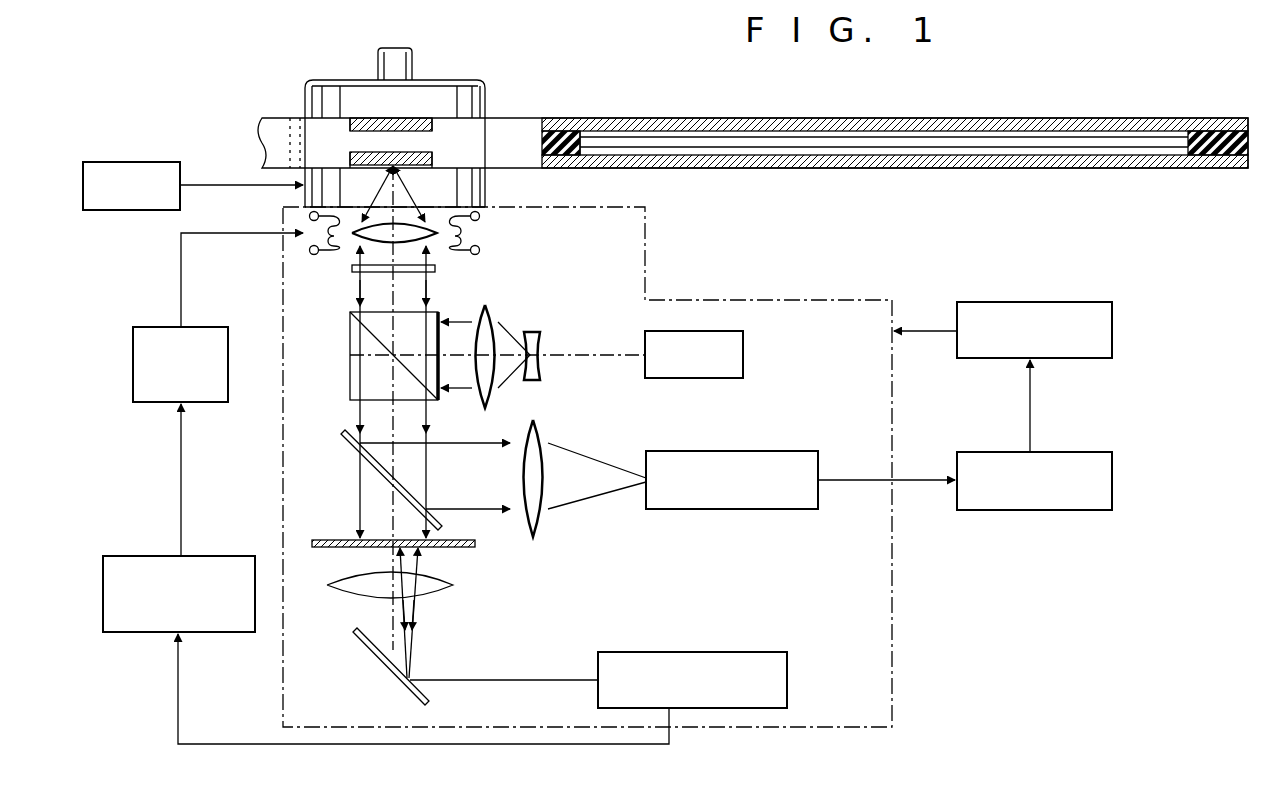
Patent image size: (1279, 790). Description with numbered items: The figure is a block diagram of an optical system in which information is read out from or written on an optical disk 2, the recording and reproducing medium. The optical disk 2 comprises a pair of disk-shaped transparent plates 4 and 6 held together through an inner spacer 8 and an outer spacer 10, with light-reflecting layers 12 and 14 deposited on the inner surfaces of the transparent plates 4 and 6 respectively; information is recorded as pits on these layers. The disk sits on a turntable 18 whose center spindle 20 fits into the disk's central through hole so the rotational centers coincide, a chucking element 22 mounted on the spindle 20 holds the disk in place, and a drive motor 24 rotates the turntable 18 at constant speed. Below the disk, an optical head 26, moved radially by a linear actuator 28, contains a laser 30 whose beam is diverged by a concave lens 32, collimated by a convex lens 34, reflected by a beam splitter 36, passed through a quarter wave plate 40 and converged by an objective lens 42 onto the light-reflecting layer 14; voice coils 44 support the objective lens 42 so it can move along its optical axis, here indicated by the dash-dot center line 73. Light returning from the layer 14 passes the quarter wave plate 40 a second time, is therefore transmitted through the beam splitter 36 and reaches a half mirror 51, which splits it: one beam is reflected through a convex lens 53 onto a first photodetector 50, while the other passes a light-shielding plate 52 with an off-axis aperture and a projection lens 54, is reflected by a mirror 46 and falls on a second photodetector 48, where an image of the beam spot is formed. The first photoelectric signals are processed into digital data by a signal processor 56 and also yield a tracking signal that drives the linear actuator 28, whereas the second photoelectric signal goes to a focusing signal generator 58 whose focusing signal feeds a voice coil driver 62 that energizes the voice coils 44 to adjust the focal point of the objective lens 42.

The optical disk 2 is at (640, 117).
The transparent plate 4 is at (1030, 118).
The transparent plate 6 is at (765, 169).
The inner spacer 8 is at (572, 131).
The outer spacer 10 is at (1212, 131).
The light-reflecting layer 12 is at (1094, 131).
The light-reflecting layer 14 is at (875, 169).
The turntable 18 is at (486, 188).
The center spindle 20 is at (413, 62).
The chucking element 22 is at (486, 96).
The drive motor 24 is at (140, 161).
The optical head 26 is at (733, 300).
The linear actuator 28 is at (1086, 302).
The laser 30 is at (744, 350).
The concave lens 32 is at (541, 340).
The convex lens 34 is at (498, 312).
The beam splitter 36 is at (350, 362).
The quarter wave plate 40 is at (352, 268).
The objective lens 42 is at (437, 234).
The voice coils 44 is at (480, 238).
The mirror 46 is at (360, 640).
The second photodetector 48 is at (713, 652).
The first photodetector 50 is at (766, 451).
The half mirror 51 is at (345, 446).
The light-shielding plate 52 is at (476, 545).
The convex lens 53 is at (548, 440).
The projection lens 54 is at (440, 588).
The signal processor 56 is at (1090, 452).
The focusing signal generator 58 is at (146, 556).
The voice coil driver 62 is at (206, 403).
The optical axis 73 is at (395, 461).